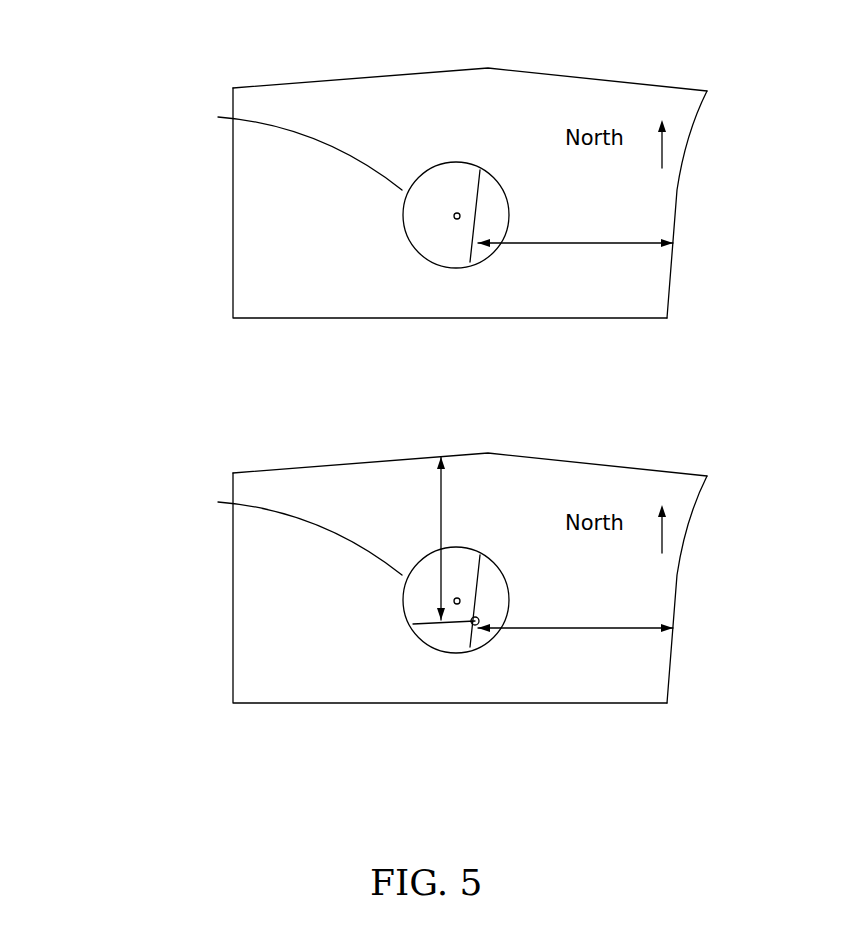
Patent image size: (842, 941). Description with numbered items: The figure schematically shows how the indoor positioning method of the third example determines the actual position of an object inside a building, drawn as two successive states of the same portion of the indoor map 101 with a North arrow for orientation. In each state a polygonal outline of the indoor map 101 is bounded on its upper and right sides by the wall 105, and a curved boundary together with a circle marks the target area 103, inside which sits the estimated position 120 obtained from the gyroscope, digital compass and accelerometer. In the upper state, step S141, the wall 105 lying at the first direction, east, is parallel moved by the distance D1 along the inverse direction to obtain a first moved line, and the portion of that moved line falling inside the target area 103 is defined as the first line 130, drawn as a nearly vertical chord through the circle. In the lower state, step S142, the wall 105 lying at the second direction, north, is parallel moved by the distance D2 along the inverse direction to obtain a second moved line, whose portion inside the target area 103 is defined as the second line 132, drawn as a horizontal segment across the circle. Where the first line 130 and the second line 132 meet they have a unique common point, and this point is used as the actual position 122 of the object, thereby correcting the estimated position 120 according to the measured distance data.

The indoor map 101 is at (287, 100).
The target area 103 is at (276, 336).
The wall 105 is at (487, 68).
The 1st line 130 is at (480, 195).
The estimated position 120 is at (457, 606).
The actual position 122 is at (474, 626).
The 2nd line 132 is at (413, 625).
The distance D1 is at (575, 421).
The distance D2 is at (420, 538).
The step S141 is at (185, 205).
The step S142 is at (185, 590).